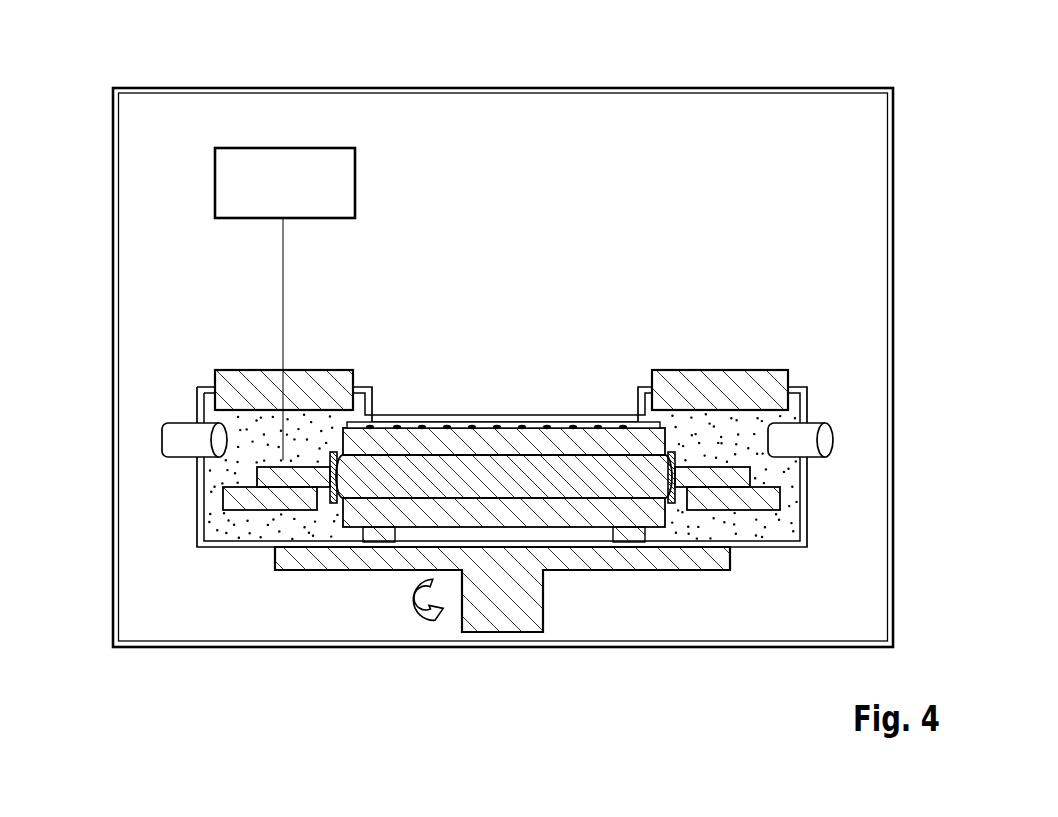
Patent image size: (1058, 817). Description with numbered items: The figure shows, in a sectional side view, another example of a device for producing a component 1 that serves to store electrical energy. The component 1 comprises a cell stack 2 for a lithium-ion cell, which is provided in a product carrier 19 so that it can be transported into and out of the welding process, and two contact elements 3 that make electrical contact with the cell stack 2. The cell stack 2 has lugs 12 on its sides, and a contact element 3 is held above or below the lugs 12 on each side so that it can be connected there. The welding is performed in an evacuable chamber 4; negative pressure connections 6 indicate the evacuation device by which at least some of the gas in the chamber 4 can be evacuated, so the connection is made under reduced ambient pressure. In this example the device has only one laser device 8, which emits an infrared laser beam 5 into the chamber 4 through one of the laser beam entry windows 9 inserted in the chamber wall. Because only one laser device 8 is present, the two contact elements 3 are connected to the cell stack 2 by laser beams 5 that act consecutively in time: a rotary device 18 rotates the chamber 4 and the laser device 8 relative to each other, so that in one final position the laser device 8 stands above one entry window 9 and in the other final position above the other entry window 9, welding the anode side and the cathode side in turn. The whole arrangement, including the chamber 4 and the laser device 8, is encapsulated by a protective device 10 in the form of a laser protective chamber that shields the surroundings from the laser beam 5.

The component 1 is at (504, 448).
The cell stack 2 is at (428, 470).
The contact element 3 is at (228, 494).
The chamber 4 is at (547, 414).
The laser beam 5 is at (283, 285).
The negative pressure connection 6 is at (162, 441).
The laser device 8 is at (283, 148).
The laser beam entry window 9 is at (215, 375).
The protective device 10 is at (600, 88).
The lug 12 is at (262, 468).
The rotary device 18 is at (490, 617).
The product carrier 19 is at (488, 432).